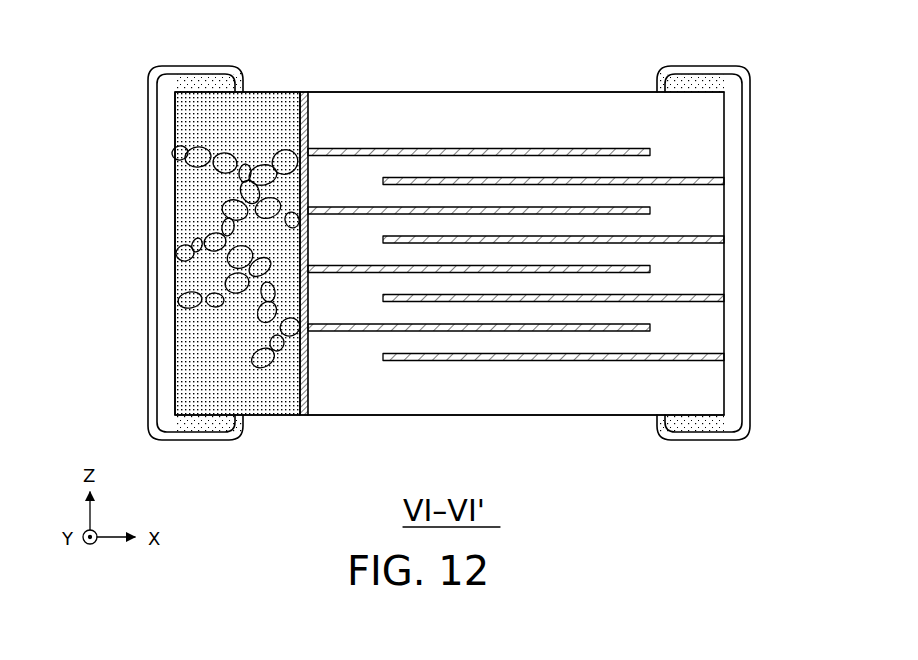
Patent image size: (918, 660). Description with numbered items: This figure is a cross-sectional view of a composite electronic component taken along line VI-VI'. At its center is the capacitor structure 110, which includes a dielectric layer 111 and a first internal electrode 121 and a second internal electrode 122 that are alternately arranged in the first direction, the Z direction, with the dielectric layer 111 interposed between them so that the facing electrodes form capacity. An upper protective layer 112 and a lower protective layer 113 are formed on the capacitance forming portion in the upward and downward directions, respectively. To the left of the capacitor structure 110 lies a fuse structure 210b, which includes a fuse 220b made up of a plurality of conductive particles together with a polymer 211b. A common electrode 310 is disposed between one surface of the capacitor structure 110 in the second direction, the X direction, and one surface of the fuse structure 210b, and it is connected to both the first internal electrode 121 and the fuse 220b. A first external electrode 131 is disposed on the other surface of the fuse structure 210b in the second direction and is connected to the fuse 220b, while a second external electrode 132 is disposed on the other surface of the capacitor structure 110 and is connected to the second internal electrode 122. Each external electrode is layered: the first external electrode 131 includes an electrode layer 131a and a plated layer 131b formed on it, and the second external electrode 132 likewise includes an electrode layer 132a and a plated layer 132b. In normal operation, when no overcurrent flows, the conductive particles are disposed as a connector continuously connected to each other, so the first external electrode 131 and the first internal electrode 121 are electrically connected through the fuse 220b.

The capacitor structure 110 is at (568, 90).
The dielectric layer 111 is at (513, 340).
The upper protective layer 112 is at (486, 108).
The lower protective layer 113 is at (578, 385).
The first internal electrode 121 is at (403, 331).
The second internal electrode 122 is at (447, 361).
The first external electrode 131 is at (68, 247).
The electrode layer 131a is at (167, 253).
The plated layer 131b is at (152, 310).
The second external electrode 132 is at (824, 247).
The electrode layer 132a is at (733, 252).
The plated layer 132b is at (750, 310).
The fuse structure 210b is at (292, 90).
The polymer 211b is at (207, 126).
The fuse 220b is at (202, 160).
The common electrode 310 is at (340, 110).